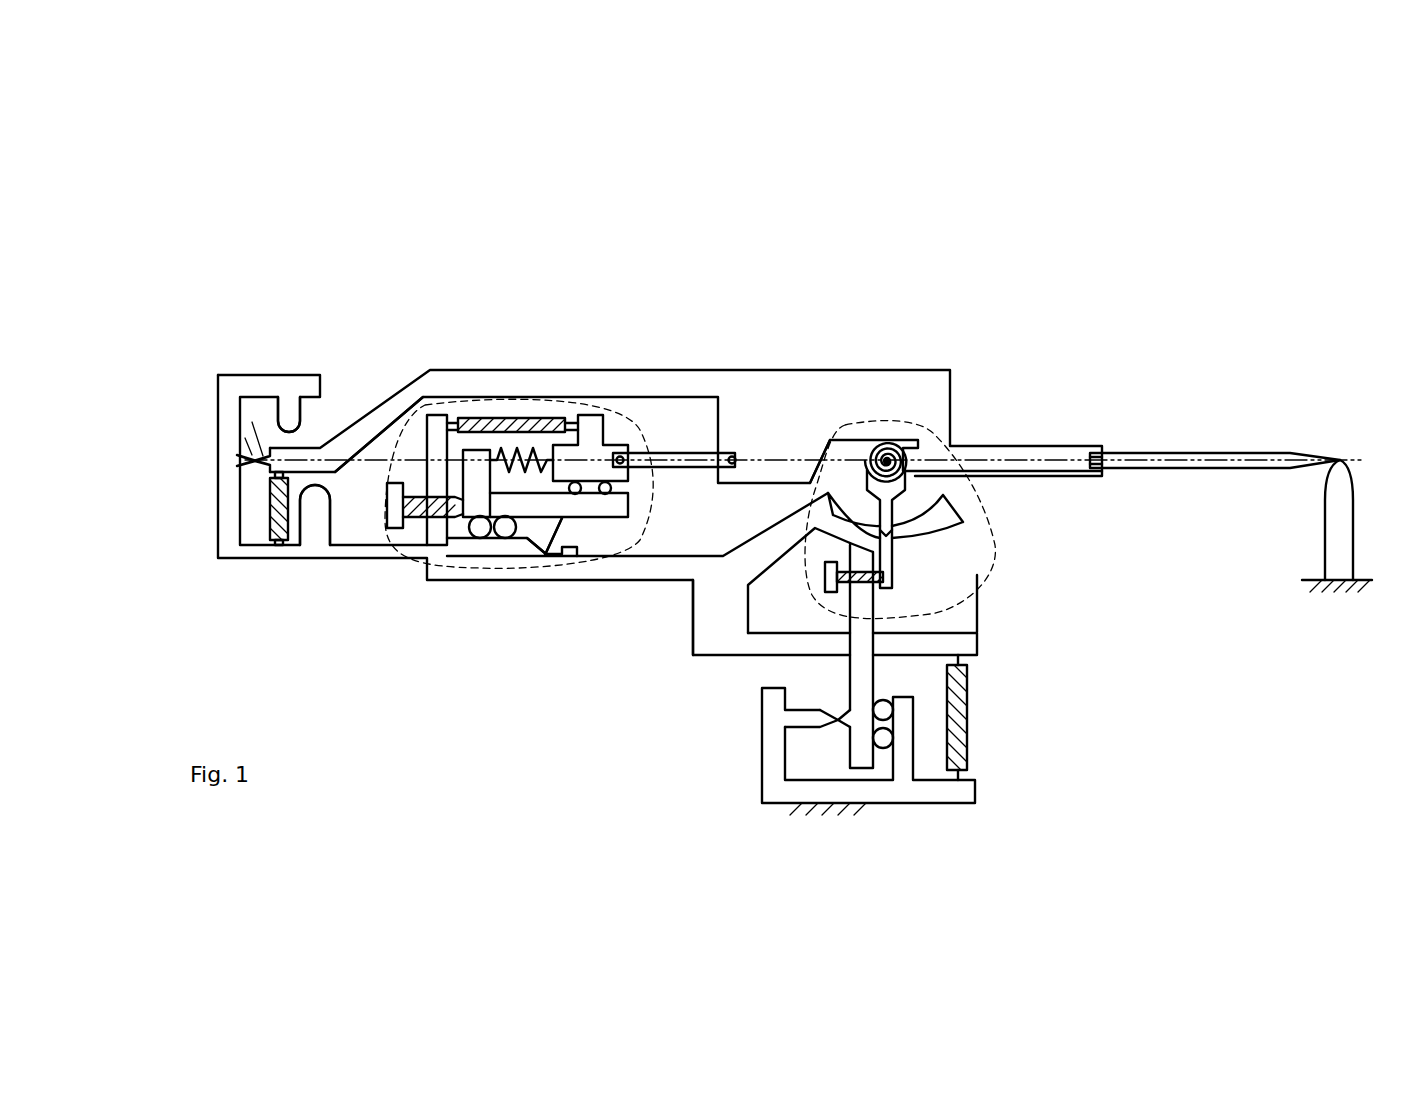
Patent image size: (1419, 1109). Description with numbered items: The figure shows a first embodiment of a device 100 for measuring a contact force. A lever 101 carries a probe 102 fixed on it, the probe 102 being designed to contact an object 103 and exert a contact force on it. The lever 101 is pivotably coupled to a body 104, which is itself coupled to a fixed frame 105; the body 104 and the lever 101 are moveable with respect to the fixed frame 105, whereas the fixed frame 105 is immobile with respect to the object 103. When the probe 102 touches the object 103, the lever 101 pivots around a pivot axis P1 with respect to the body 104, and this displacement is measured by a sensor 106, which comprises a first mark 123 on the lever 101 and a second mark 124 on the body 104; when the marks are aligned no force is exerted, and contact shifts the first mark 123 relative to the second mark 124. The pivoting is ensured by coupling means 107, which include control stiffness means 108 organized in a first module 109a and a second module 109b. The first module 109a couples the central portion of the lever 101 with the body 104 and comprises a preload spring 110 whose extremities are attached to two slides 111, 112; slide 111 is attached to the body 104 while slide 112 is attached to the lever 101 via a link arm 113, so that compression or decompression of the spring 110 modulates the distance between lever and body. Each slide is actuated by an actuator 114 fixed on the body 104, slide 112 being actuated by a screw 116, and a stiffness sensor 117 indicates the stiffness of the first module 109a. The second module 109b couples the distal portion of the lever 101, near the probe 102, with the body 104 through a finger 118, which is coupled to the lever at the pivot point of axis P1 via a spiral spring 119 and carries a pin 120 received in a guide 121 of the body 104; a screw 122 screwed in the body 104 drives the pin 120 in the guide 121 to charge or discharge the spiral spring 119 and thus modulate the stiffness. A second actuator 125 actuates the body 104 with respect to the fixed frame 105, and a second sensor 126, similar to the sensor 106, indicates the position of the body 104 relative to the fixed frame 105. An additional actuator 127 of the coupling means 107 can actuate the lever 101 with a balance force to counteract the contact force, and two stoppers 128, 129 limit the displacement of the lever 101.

The device 100 is at (1202, 262).
The lever 101 is at (780, 405).
The probe 102 is at (1213, 462).
The object 103 is at (1340, 525).
The body 104 is at (682, 567).
The fixed frame 105 is at (895, 803).
The sensor 106 is at (201, 487).
The coupling means 107 is at (600, 558).
The control stiffness means 108 is at (423, 407).
The first module 109a is at (383, 523).
The second module 109b is at (994, 562).
The preload spring 110 is at (505, 452).
The slide 111 is at (588, 433).
The slide 112 is at (478, 507).
The link arm 113 is at (676, 452).
The actuator 114 is at (477, 418).
The screw 116 is at (397, 517).
The stiffness sensor 117 is at (542, 524).
The finger 118 is at (887, 490).
The spiral spring 119 is at (900, 443).
The pin 120 is at (895, 535).
The guide 121 is at (933, 523).
The screw 122 is at (827, 580).
The first mark 123 is at (194, 413).
The second mark 124 is at (188, 429).
The second actuator 125 is at (957, 738).
The second sensor 126 is at (832, 738).
The additional actuator 127 is at (272, 528).
The stopper 128 is at (289, 420).
The stopper 129 is at (320, 500).
The pivot axis P1 is at (886, 452).